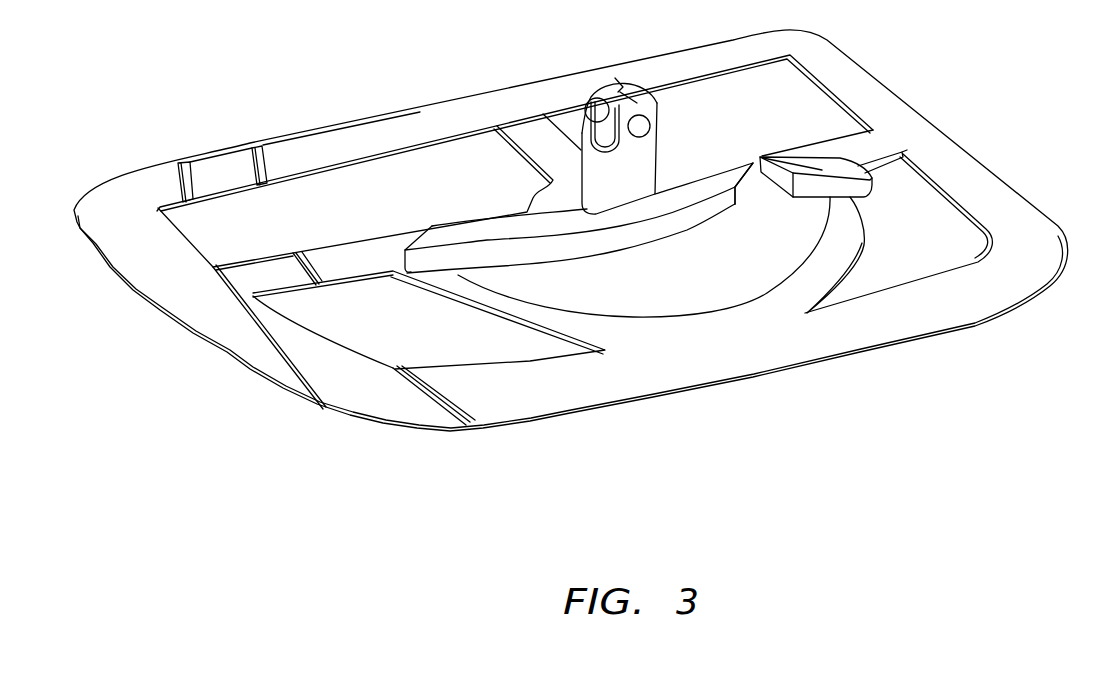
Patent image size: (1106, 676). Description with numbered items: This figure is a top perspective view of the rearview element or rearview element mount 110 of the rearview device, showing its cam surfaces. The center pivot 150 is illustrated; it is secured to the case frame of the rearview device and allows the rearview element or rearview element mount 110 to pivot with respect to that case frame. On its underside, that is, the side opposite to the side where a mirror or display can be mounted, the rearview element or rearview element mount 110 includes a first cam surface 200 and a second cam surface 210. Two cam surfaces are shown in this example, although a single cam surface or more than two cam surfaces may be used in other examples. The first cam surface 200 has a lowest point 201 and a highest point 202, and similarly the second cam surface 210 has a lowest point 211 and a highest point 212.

The rearview element or rearview element mount 110 is at (1016, 200).
The center pivot 150 is at (637, 118).
The first cam surface 200 is at (581, 265).
The lowest point of the first cam surface 201 is at (432, 250).
The highest point of the first cam surface 202 is at (732, 185).
The second cam surface 210 is at (845, 198).
The lowest point of the second cam surface 211 is at (903, 153).
The highest point of the second cam surface 212 is at (797, 197).